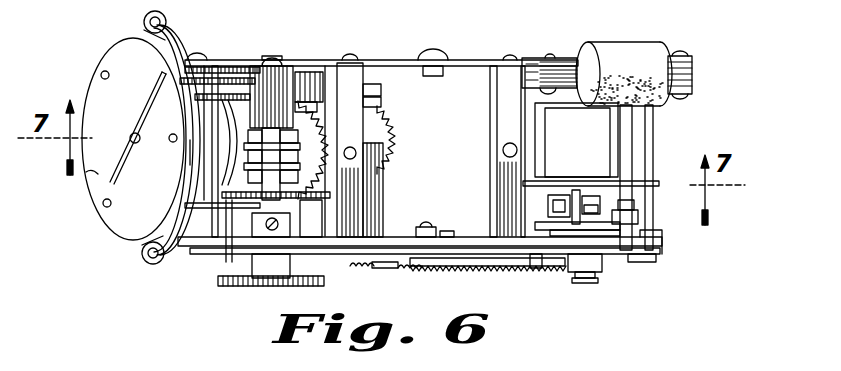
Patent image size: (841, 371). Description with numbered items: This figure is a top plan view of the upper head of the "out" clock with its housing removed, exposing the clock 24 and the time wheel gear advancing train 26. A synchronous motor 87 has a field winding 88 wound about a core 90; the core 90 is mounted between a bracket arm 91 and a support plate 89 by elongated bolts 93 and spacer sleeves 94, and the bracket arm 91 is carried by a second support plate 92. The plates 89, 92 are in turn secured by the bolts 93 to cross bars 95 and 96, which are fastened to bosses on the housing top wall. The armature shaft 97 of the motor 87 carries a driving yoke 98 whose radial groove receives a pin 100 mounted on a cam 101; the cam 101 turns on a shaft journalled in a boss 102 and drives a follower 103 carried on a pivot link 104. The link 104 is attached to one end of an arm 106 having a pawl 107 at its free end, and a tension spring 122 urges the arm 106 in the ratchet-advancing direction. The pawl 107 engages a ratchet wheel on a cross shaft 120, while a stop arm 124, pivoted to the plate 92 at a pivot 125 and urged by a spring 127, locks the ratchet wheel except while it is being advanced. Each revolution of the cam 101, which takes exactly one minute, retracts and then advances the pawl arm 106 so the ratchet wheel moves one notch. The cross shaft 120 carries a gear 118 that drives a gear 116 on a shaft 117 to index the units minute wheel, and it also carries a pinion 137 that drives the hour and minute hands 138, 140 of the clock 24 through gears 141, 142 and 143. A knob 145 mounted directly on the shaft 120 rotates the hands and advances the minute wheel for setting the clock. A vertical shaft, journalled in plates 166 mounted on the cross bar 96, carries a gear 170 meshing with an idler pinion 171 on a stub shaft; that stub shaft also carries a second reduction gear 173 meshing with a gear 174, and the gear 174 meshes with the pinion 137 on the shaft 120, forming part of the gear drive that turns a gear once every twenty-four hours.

The clock 24 is at (124, 50).
The minute hand 140 is at (140, 102).
The gear 143 is at (202, 153).
The hour hand 138 is at (96, 175).
The gear 141 is at (204, 70).
The gear 142 is at (226, 95).
The cross shaft 120 is at (270, 60).
The gear 174 is at (302, 76).
The pinion 137 is at (290, 78).
The time wheel gear advancing train 26 is at (322, 80).
The cross bar 96 is at (350, 82).
The bracket arm 91 is at (482, 60).
The cross bar 95 is at (513, 78).
The field winding 88 is at (636, 62).
The core 90 is at (694, 74).
The support plate 89 is at (470, 70).
The second reduction gear 173 is at (378, 92).
The idler pinion 171 is at (372, 103).
The gear 170 is at (378, 138).
The plates 166 is at (384, 163).
The synchronous motor 87 is at (607, 123).
The spacer sleeves 94 is at (643, 149).
The driving yoke 98 is at (553, 200).
The pin 100 is at (572, 195).
The armature shaft 97 is at (586, 200).
The follower 103 is at (638, 211).
The pivot link 104 is at (664, 240).
The elongated bolts 93 is at (650, 262).
The cam 101 is at (600, 264).
The boss 102 is at (600, 272).
The tension spring 122 is at (535, 268).
The arm 106 is at (462, 264).
The stop arm 124 is at (408, 272).
The spring 127 is at (370, 270).
The pawl 107 is at (318, 232).
The shaft 117 is at (314, 284).
The knob 145 is at (277, 288).
The gear 118 is at (224, 246).
The gear 116 is at (325, 200).
The pivot 125 is at (426, 228).
The second support plate 92 is at (448, 232).